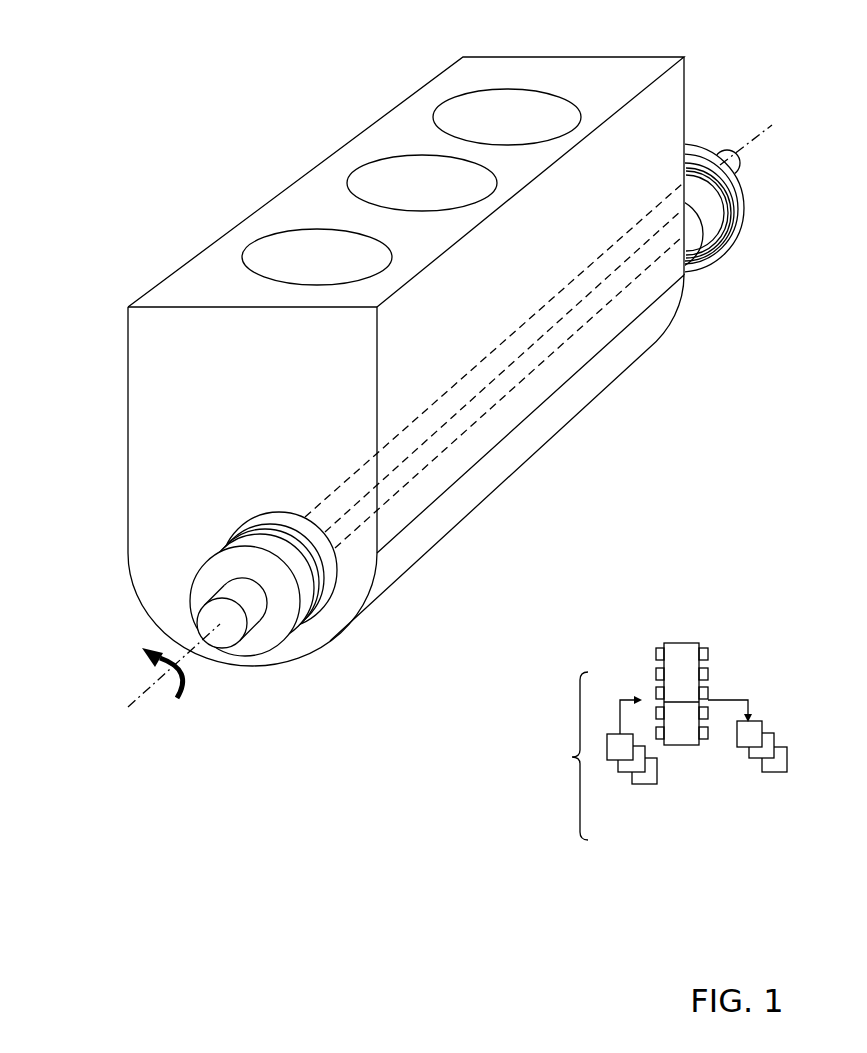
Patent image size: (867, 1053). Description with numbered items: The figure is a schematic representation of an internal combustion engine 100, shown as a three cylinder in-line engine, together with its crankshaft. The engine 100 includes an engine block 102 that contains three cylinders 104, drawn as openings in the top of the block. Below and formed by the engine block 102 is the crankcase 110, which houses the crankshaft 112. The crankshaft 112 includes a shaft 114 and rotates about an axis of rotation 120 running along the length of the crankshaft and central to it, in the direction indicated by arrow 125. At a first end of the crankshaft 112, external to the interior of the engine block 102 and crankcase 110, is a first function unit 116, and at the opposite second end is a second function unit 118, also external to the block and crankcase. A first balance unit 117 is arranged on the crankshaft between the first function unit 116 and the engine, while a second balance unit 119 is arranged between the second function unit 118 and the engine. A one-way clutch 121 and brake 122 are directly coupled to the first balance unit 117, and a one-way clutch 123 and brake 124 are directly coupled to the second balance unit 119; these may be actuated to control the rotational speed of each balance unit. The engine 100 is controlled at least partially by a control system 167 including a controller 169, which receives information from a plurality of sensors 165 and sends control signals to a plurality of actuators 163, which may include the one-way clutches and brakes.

The engine 100 is at (148, 90).
The engine block 102 is at (178, 270).
The cylinders 104 is at (387, 157).
The crankcase 110 is at (127, 575).
The crankshaft 112 is at (316, 460).
The shaft 114 is at (202, 603).
The first function unit 116 is at (282, 650).
The first balance unit 117 is at (337, 593).
The second function unit 118 is at (745, 187).
The second balance unit 119 is at (695, 272).
The axis of rotation 120 is at (135, 697).
The one-way clutch 121 is at (344, 587).
The brake 122 is at (303, 618).
The one-way clutch 123 is at (740, 229).
The brake 124 is at (728, 222).
The arrow 125 is at (187, 675).
The actuators 163 is at (728, 777).
The sensors 165 is at (597, 790).
The control system 167 is at (650, 741).
The controller 169 is at (682, 694).